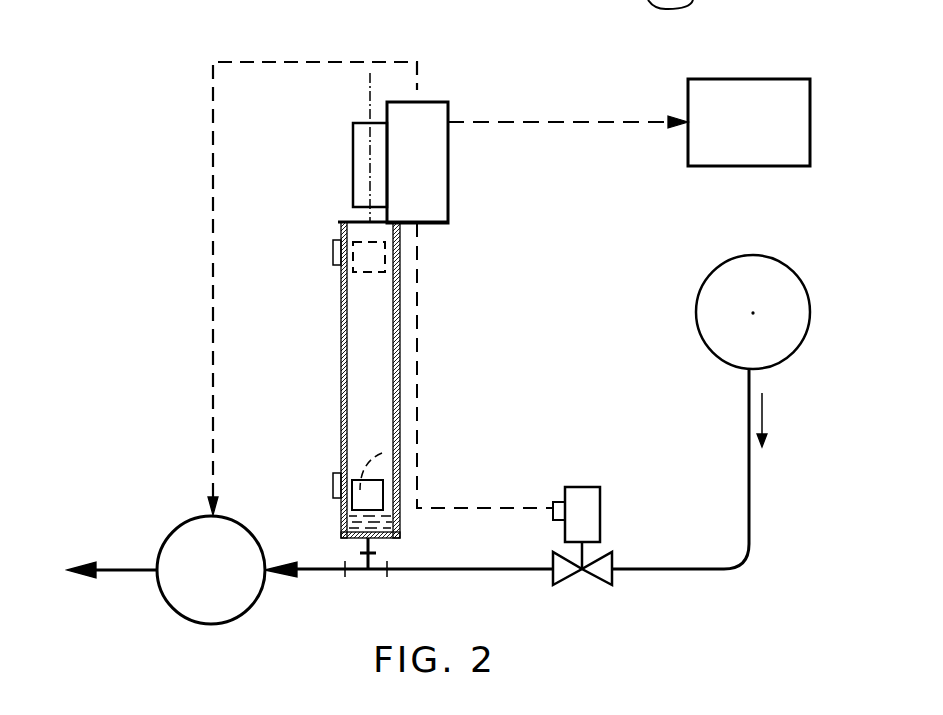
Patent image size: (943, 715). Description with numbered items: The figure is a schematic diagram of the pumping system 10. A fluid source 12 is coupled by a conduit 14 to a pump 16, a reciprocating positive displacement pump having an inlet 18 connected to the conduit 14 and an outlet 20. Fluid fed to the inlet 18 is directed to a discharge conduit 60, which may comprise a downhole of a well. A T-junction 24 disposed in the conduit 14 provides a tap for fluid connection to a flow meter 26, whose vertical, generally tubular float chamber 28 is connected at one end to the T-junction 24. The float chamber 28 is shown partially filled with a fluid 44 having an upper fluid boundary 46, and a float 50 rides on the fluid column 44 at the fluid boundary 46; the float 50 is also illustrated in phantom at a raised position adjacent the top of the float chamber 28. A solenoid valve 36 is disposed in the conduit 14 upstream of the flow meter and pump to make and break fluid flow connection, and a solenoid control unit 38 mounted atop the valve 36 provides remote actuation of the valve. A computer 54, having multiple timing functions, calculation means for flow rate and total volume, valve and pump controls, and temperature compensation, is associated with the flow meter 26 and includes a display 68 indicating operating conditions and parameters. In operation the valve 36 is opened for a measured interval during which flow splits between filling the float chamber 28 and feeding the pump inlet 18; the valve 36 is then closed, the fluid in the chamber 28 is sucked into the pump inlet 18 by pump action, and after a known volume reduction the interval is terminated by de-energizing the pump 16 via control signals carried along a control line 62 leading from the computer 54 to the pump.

The pumping system 10 is at (570, 92).
The fluid source 12 is at (697, 297).
The conduit 14 is at (750, 483).
The pump 16 is at (207, 614).
The inlet 18 is at (270, 582).
The outlet 20 is at (152, 582).
The T-junction 24 is at (362, 573).
The flow meter 26 is at (465, 175).
The float chamber 28 is at (330, 385).
The solenoid valve 36 is at (578, 478).
The solenoid control unit 38 is at (600, 512).
The fluid 44 is at (333, 490).
The upper fluid boundary 46 is at (425, 454).
The float 50 is at (384, 498).
The computer 54 is at (343, 158).
The discharge conduit 60 is at (142, 565).
The control line 62 is at (213, 243).
The display 68 is at (748, 168).